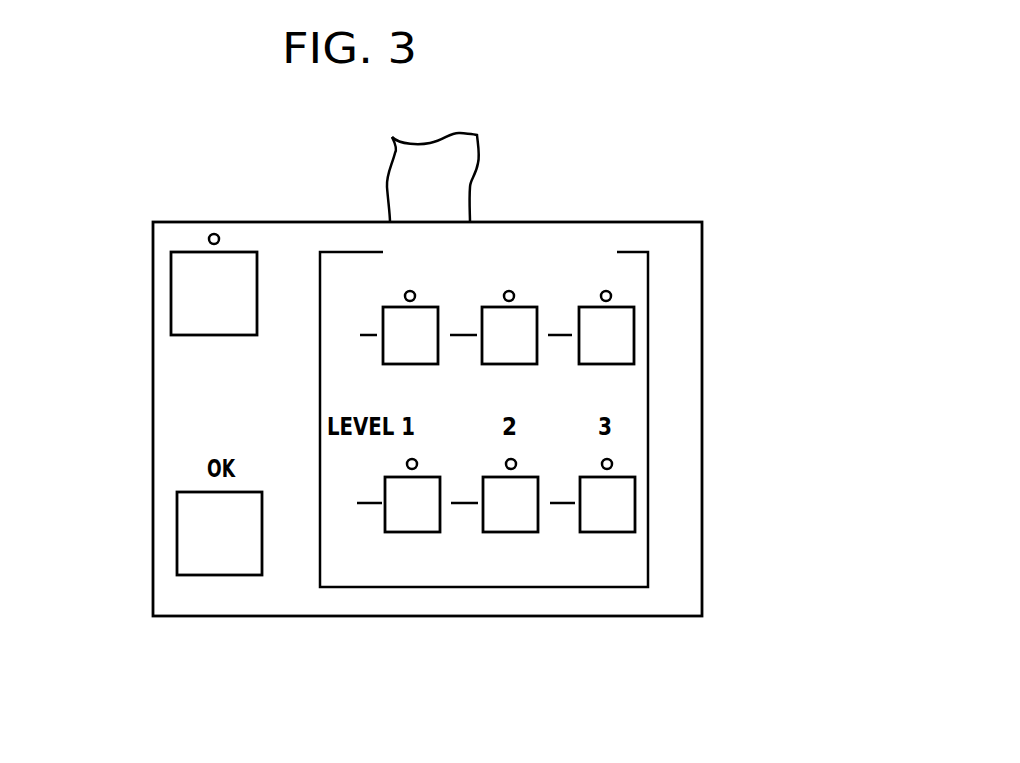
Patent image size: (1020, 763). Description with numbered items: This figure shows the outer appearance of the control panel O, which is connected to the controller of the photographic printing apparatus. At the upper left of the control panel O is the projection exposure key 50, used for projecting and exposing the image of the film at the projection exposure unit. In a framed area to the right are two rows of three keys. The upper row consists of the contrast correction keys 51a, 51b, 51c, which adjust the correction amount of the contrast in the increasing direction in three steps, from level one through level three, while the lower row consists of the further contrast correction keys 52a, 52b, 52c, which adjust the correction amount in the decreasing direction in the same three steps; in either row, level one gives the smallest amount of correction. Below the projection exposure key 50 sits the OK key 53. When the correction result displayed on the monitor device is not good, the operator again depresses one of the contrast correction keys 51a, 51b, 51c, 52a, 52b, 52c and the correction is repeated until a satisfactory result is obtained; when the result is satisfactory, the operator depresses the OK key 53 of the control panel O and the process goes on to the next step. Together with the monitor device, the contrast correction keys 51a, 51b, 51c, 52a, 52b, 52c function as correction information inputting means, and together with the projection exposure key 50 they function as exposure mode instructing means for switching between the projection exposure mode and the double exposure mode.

The control panel O is at (703, 493).
The projection exposure key 50 is at (171, 252).
The contrast correction key 51a is at (383, 307).
The contrast correction key 51b is at (540, 307).
The contrast correction key 51c is at (634, 333).
The contrast correction key 52a is at (393, 532).
The contrast correction key 52b is at (510, 532).
The contrast correction key 52c is at (625, 532).
The OK key 53 is at (220, 575).